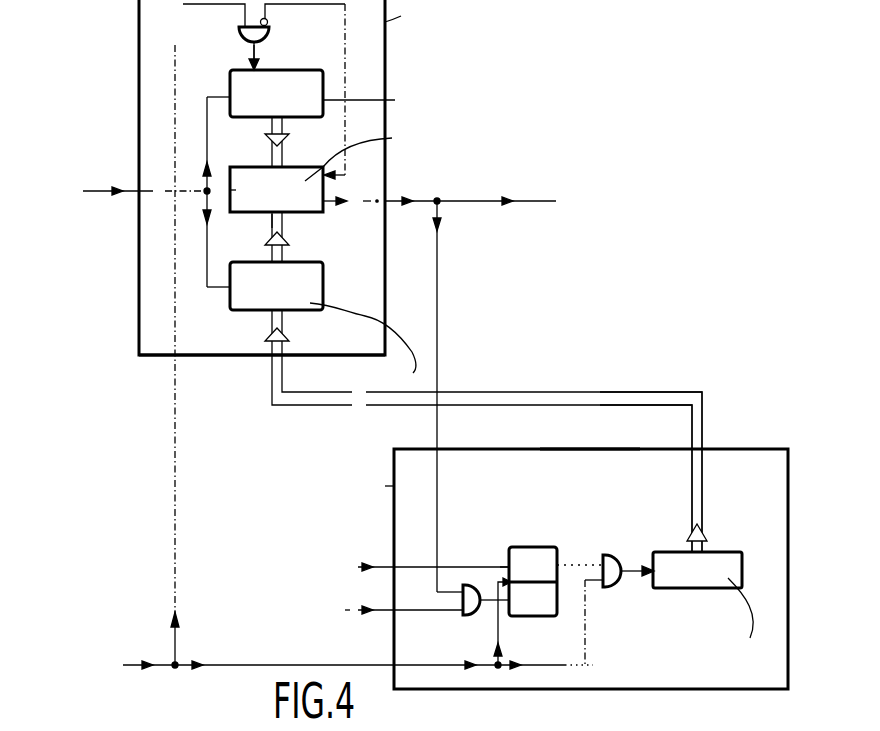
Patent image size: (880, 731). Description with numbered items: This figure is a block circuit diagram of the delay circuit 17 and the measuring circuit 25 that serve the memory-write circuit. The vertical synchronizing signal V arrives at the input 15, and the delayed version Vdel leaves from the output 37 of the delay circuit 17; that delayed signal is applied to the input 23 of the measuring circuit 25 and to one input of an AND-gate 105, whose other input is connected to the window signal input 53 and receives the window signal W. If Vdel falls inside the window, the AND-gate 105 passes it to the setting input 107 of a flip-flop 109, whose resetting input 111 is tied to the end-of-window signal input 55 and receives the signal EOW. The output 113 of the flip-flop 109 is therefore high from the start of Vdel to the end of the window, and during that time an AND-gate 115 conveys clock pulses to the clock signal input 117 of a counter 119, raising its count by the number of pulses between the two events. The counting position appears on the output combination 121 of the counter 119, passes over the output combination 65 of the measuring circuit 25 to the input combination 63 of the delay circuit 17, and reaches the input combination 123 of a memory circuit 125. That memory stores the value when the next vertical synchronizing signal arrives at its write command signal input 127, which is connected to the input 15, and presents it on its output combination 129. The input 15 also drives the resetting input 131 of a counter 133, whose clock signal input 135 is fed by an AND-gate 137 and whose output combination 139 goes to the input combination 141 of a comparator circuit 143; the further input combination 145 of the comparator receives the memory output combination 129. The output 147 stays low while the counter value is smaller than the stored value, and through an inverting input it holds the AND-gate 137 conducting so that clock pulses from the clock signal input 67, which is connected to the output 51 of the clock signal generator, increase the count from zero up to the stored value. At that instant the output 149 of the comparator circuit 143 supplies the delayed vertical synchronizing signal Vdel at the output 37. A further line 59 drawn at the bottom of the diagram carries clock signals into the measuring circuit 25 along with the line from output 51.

The input for the vertical synchronizing signal 15 is at (97, 192).
The delay circuit 17 is at (385, 69).
The input of the measuring circuit 23 is at (440, 449).
The measuring circuit 25 is at (586, 462).
The output of the delay circuit 37 is at (388, 200).
The output of the clock signal generator 51 is at (133, 668).
The window signal input 53 is at (390, 617).
The end-of-window signal input 55 is at (390, 566).
The line 59 is at (392, 668).
The input combination of the delay circuit 63 is at (284, 356).
The output combination of the measuring circuit 65 is at (702, 441).
The clock signal input of the delay circuit 67 is at (175, 357).
The AND-gate 105 is at (469, 617).
The setting input of the flip-flop 107 is at (505, 612).
The flip-flop 109 is at (545, 607).
The resetting input of the flip-flop 111 is at (509, 556).
The output of the flip-flop 113 is at (560, 562).
The AND-gate 115 is at (617, 556).
The clock signal input of the counter 117 is at (648, 578).
The counter 119 is at (713, 582).
The output combination of the counter 121 is at (703, 546).
The input combination of the memory circuit 123 is at (284, 312).
The memory circuit 125 is at (311, 287).
The write command signal input of the memory circuit 127 is at (228, 291).
The output combination of the memory circuit 129 is at (281, 251).
The resetting input of the counter 131 is at (228, 92).
The counter 133 is at (307, 84).
The clock signal input of the counter 135 is at (262, 67).
The AND-gate 137 is at (268, 34).
The output combination of the counter 139 is at (280, 122).
The input combination of the comparator circuit 141 is at (277, 164).
The comparator circuit 143 is at (258, 178).
The further input combination of the comparator circuit 145 is at (271, 218).
The output of the comparator circuit 147 is at (325, 179).
The output of the comparator circuit 149 is at (325, 206).